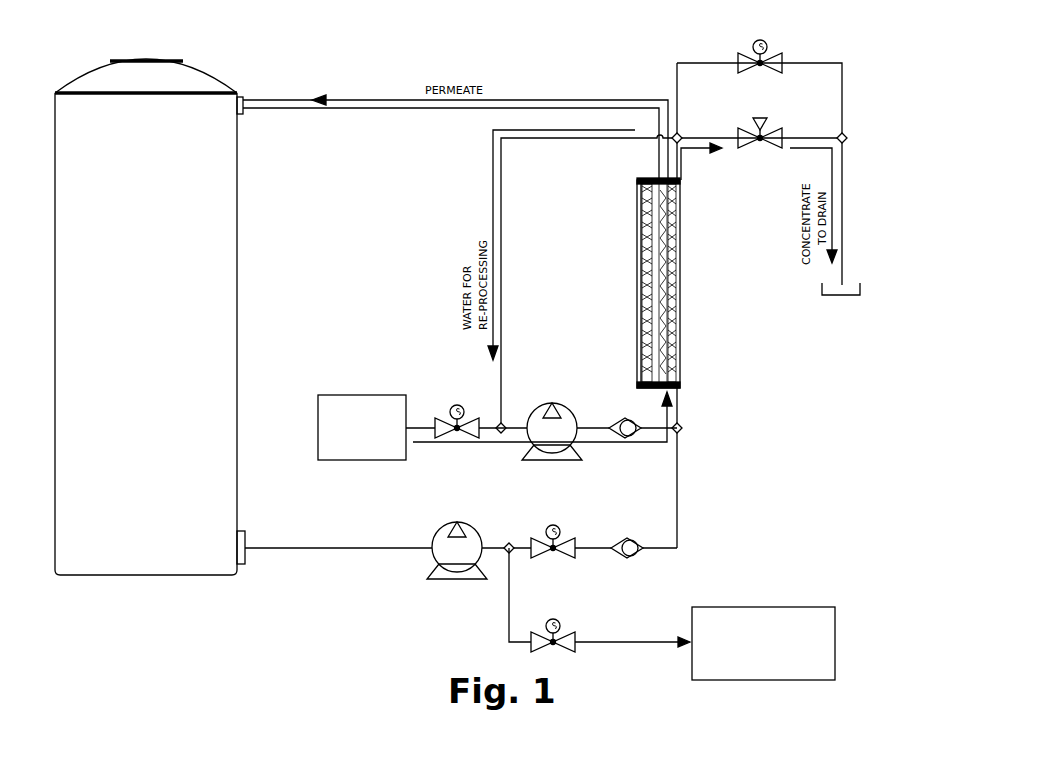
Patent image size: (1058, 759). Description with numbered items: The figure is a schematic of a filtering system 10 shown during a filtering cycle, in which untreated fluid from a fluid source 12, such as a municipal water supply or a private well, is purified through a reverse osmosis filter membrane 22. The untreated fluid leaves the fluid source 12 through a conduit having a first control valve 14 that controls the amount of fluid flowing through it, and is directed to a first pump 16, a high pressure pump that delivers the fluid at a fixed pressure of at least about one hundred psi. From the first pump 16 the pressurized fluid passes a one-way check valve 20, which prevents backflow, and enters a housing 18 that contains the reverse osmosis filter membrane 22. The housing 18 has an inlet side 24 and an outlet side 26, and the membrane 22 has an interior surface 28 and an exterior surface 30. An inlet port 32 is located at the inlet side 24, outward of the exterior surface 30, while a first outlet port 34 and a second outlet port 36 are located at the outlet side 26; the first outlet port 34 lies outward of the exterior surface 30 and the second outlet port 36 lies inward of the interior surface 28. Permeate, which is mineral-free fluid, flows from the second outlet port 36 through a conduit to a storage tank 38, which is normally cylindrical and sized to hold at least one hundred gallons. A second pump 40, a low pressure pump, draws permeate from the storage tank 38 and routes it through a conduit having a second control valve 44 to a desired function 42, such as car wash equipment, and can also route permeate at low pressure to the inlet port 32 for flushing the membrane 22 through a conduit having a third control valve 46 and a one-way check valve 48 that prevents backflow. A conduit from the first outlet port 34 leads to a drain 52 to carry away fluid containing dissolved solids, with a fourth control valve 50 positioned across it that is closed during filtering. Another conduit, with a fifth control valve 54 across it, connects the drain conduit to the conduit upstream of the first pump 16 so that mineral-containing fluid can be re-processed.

The filtering system 10 is at (902, 36).
The fluid source 12 is at (360, 395).
The first control valve 14 is at (464, 410).
The first pump 16 is at (562, 404).
The housing 18 is at (660, 275).
The one-way check valve 20 is at (637, 420).
The reverse osmosis filter membrane 22 is at (674, 236).
The inlet side 24 is at (650, 388).
The outlet side 26 is at (639, 181).
The interior surface 28 is at (662, 290).
The exterior surface 30 is at (645, 234).
The inlet port 32 is at (682, 388).
The first outlet port 34 is at (682, 180).
The second outlet port 36 is at (655, 178).
The storage tank 38 is at (212, 68).
The second pump 40 is at (470, 524).
The desired function 42 is at (782, 607).
The second control valve 44 is at (560, 624).
The third control valve 46 is at (560, 530).
The one-way check valve 48 is at (636, 540).
The fourth control valve 50 is at (772, 44).
The drain 52 is at (862, 288).
The fifth control valve 54 is at (770, 122).